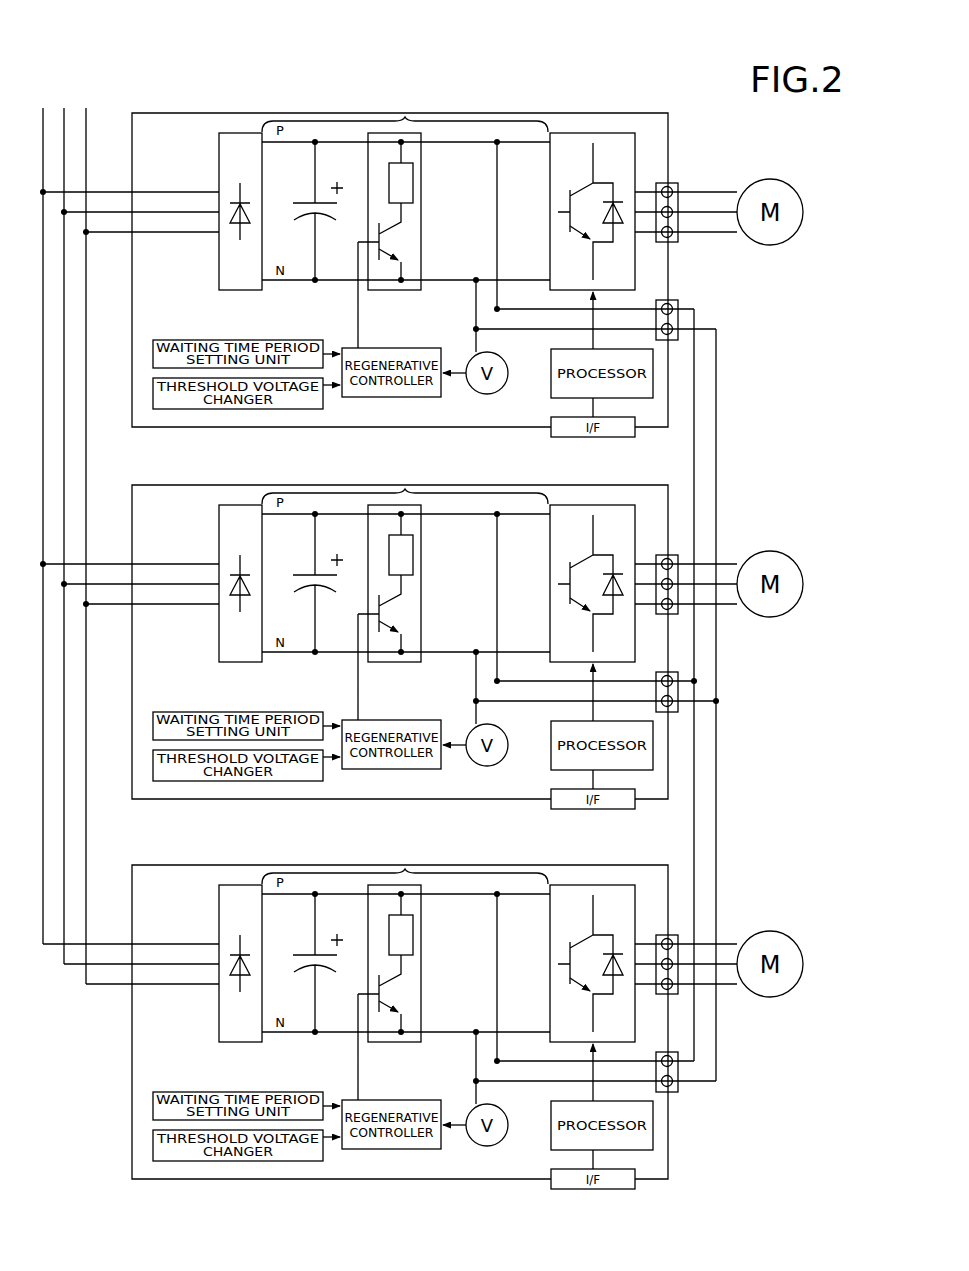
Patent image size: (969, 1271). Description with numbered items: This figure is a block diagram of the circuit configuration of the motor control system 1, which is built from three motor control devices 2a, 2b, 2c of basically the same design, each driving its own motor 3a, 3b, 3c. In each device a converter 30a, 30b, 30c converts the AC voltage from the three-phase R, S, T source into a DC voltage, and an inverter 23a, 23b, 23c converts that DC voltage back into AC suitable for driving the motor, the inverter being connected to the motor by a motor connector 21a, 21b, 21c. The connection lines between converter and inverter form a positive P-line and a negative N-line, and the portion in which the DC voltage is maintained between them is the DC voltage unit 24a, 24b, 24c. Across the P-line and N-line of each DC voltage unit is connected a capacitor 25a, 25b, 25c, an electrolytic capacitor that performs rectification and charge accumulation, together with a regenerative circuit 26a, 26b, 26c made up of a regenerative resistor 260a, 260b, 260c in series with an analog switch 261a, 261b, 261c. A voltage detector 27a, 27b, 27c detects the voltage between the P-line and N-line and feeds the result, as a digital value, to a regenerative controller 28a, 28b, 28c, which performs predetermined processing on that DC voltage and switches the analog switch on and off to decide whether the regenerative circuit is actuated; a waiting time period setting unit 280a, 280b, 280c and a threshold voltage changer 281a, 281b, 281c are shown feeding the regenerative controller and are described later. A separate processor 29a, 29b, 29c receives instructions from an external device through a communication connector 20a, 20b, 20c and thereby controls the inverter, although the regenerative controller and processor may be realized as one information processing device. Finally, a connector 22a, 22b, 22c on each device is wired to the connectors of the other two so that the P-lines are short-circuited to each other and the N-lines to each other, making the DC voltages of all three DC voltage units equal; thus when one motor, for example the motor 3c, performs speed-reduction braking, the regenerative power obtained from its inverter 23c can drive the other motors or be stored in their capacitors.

The motor control system 1 is at (63, 1204).
The motor control device 2a is at (400, 291).
The motor control device 2b is at (400, 663).
The motor control device 2c is at (400, 1043).
The motor 3a is at (770, 195).
The motor 3b is at (770, 567).
The motor 3c is at (770, 947).
The communication connector 20a is at (583, 447).
The communication connector 20b is at (583, 819).
The communication connector 20c is at (584, 1199).
The motor connector 21a is at (686, 185).
The motor connector 21b is at (686, 557).
The motor connector 21c is at (685, 937).
The connector 22a is at (686, 297).
The connector 22b is at (686, 669).
The connector 22c is at (686, 1097).
The inverter 23a is at (602, 185).
The inverter 23b is at (602, 557).
The inverter 23c is at (601, 937).
The DC voltage unit 24a is at (405, 101).
The DC voltage unit 24b is at (405, 473).
The DC voltage unit 24c is at (405, 853).
The capacitor 25a is at (306, 211).
The capacitor 25b is at (306, 583).
The capacitor 25c is at (307, 963).
The regenerative circuit 26a is at (429, 211).
The regenerative circuit 26b is at (429, 583).
The regenerative circuit 26c is at (429, 963).
The regenerative resistor 260a is at (441, 179).
The regenerative resistor 260b is at (441, 551).
The regenerative resistor 260c is at (440, 931).
The analog switch 261a is at (425, 241).
The analog switch 261b is at (425, 613).
The analog switch 261c is at (424, 993).
The voltage detector 27a is at (503, 391).
The voltage detector 27b is at (503, 763).
The voltage detector 27c is at (502, 1143).
The regenerative controller 28a is at (391, 353).
The regenerative controller 28b is at (391, 725).
The regenerative controller 28c is at (391, 1105).
The waiting time period setting unit 280a is at (248, 334).
The waiting time period setting unit 280b is at (248, 706).
The waiting time period setting unit 280c is at (248, 1086).
The threshold voltage changer 281a is at (273, 402).
The threshold voltage changer 281b is at (273, 774).
The threshold voltage changer 281c is at (272, 1154).
The processor 29a is at (578, 364).
The processor 29b is at (578, 736).
The processor 29c is at (578, 1116).
The converter 30a is at (246, 232).
The converter 30b is at (246, 604).
The converter 30c is at (246, 984).